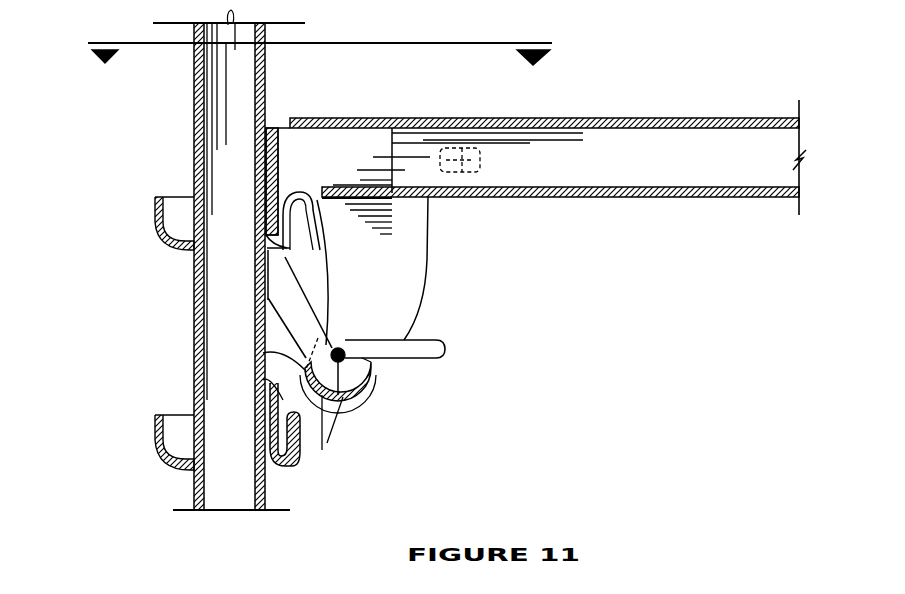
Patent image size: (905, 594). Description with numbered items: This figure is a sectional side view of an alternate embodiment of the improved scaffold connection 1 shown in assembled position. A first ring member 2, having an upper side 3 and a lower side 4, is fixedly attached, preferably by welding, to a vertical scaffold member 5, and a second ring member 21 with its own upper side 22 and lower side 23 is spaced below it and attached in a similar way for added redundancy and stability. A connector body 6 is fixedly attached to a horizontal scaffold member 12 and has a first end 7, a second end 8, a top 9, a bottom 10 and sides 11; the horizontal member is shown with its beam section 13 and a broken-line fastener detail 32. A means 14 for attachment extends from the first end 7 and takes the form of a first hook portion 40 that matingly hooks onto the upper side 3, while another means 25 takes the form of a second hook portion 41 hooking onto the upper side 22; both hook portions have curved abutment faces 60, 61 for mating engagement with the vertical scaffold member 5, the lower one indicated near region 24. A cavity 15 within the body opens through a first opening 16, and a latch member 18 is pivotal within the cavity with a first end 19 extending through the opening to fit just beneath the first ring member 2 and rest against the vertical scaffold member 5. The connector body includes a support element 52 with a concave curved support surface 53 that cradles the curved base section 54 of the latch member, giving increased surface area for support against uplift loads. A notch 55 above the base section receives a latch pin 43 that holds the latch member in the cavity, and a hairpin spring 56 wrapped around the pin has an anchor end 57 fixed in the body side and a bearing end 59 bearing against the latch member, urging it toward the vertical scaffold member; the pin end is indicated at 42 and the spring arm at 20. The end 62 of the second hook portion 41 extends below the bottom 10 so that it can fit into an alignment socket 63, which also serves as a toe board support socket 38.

The scaffold connection 1 is at (553, 278).
The first ring member 2 is at (148, 210).
The upper side 3 is at (172, 192).
The lower side 4 is at (163, 243).
The vertical scaffold member 5 is at (194, 64).
The connector body 6 is at (449, 223).
The first end 7 is at (252, 290).
The second end 8 is at (442, 256).
The top 9 is at (401, 113).
The bottom 10 is at (341, 442).
The sides 11 is at (372, 253).
The horizontal scaffold member 12 is at (710, 62).
The beam 13 is at (607, 118).
The means for attachment 14 is at (252, 146).
The cavity 15 is at (374, 313).
The first opening 16 is at (322, 298).
The latch member 18 is at (290, 308).
The first end 19 is at (307, 217).
The arm 20 is at (432, 340).
The second ring member 21 is at (150, 428).
The upper side 22 is at (172, 410).
The lower side 23 is at (176, 470).
The lower latch hook 24 is at (268, 410).
The means for attachment 25 is at (343, 325).
The fastener 32 is at (483, 170).
The toe board support socket 38 is at (272, 181).
The first hook portion 40 is at (255, 200).
The second hook portion 41 is at (268, 442).
The cradle end 42 is at (362, 360).
The latch pin 43 is at (313, 443).
The support element 52 is at (322, 450).
The curved support surface 53 is at (373, 373).
The curved base section 54 is at (305, 368).
The notch 55 is at (352, 350).
The hairpin spring 56 is at (371, 365).
The anchor end 57 is at (350, 345).
The bearing end 59 is at (339, 332).
The curved abutment face 60 is at (254, 130).
The curved abutment face 61 is at (252, 470).
The end 62 is at (295, 490).
The alignment socket 63 is at (283, 128).